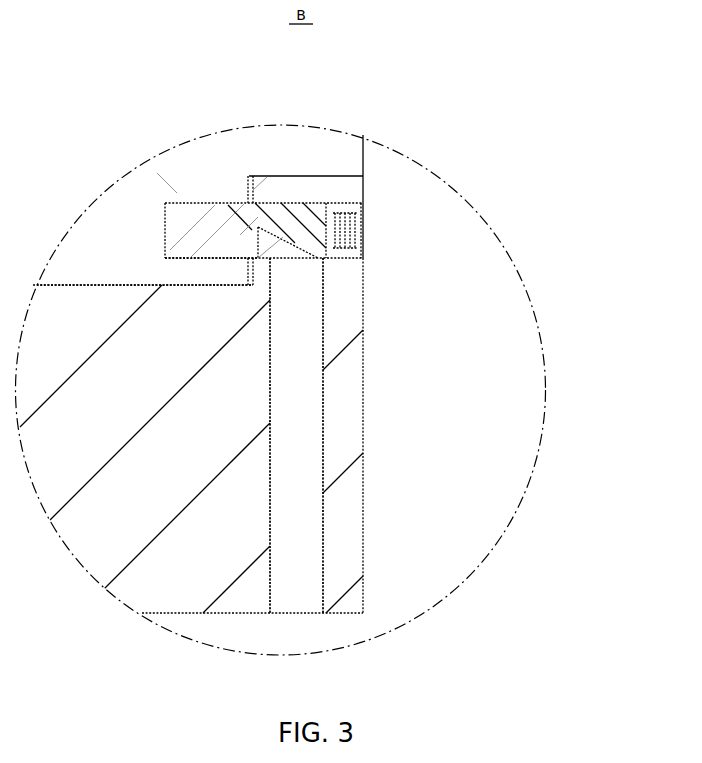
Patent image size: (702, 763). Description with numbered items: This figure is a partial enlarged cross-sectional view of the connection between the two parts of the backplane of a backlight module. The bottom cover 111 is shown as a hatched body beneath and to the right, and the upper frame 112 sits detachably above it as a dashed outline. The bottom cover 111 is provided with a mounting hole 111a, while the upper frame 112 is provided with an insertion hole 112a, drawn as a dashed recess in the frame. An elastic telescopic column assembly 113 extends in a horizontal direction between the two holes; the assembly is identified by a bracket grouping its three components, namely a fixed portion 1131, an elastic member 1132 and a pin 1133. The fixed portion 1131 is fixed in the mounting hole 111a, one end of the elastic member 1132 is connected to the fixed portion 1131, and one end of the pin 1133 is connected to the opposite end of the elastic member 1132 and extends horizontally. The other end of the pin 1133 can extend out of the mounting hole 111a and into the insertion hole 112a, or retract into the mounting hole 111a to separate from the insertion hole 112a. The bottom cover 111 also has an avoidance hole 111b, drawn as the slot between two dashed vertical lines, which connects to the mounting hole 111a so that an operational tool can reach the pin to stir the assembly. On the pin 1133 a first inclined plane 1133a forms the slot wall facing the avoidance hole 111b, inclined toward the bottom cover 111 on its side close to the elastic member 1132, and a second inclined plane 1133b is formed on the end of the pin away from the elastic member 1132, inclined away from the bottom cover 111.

The bottom cover 111 is at (131, 488).
The mounting hole 111a is at (335, 206).
The avoidance hole 111b is at (289, 552).
The upper frame 112 is at (97, 247).
The insertion hole 112a is at (195, 228).
The elastic telescopic column assembly 113 is at (574, 166).
The fixed portion 1131 is at (364, 240).
The elastic member 1132 is at (334, 232).
The pin 1133 is at (127, 82).
The first inclined plane 1133a is at (327, 225).
The second inclined plane 1133b is at (232, 255).